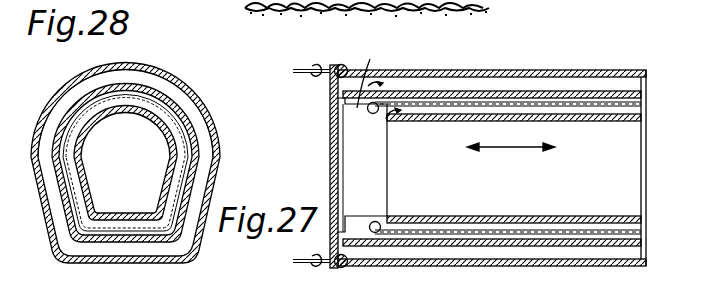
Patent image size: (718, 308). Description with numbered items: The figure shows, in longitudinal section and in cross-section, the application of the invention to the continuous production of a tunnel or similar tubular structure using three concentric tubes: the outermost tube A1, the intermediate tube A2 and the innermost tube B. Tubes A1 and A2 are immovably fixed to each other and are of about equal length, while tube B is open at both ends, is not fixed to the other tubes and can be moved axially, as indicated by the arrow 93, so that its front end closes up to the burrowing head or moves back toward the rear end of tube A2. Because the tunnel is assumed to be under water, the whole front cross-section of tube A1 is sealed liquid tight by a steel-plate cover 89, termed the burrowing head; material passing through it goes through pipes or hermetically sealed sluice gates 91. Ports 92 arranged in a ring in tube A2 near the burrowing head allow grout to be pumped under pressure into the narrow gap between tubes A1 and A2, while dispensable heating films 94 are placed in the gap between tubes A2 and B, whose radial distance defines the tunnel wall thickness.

In FIG. 27, the cover 89 is at (330, 124).
In FIG. 27, the sluice gates 91 is at (337, 179).
In FIG. 27, the ports 92 is at (379, 76).
In FIG. 27, the arrow 93 is at (513, 148).
In FIG. 28, the heating films 94 is at (67, 112).
In FIG. 27, the heating films 94 is at (646, 111).
In FIG. 28, the tube A1 is at (147, 72).
In FIG. 27, the tube A1 is at (437, 70).
In FIG. 28, the tube A2 is at (174, 107).
In FIG. 27, the tube A2 is at (484, 95).
In FIG. 28, the tube B is at (177, 156).
In FIG. 27, the tube B is at (568, 119).